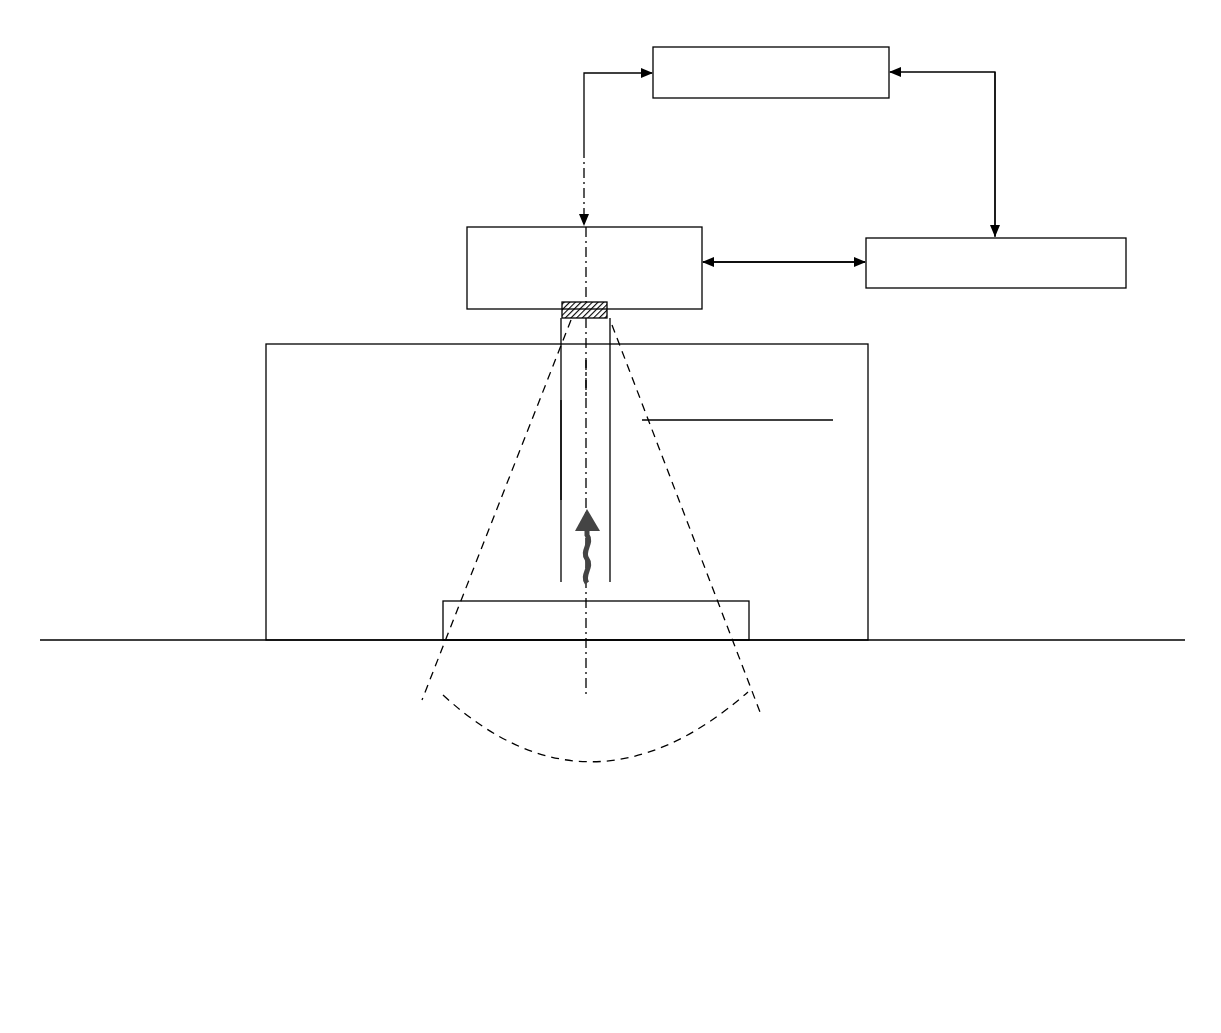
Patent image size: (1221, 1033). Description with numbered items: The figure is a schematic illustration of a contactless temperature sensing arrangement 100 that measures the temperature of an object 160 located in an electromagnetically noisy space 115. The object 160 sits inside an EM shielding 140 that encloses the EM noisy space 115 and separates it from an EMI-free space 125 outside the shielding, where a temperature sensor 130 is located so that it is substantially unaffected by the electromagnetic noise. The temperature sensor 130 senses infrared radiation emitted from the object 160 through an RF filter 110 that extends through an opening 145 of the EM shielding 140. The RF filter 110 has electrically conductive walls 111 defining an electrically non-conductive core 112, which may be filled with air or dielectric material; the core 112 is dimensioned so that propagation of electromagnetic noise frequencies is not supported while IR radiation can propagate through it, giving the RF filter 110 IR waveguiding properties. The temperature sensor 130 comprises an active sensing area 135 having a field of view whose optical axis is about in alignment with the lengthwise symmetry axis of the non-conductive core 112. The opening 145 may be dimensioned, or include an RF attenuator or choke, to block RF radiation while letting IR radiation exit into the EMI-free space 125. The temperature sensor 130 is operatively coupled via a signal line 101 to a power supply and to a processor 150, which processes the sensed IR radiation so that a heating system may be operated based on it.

The temperature sensing arrangement 100 is at (255, 237).
The signal line 101 is at (585, 152).
The RF filter 110 is at (548, 490).
The electrically conductive walls 111 is at (561, 445).
The electrically non-conductive core 112 is at (586, 377).
The EM noisy space 115 is at (368, 468).
The EMI-free space 125 is at (1020, 465).
The temperature sensor 130 is at (553, 225).
The active sensing area 135 is at (573, 298).
The EM shielding 140 is at (266, 437).
The opening 145 is at (573, 350).
The processor 150 is at (866, 246).
The object 160 is at (443, 618).